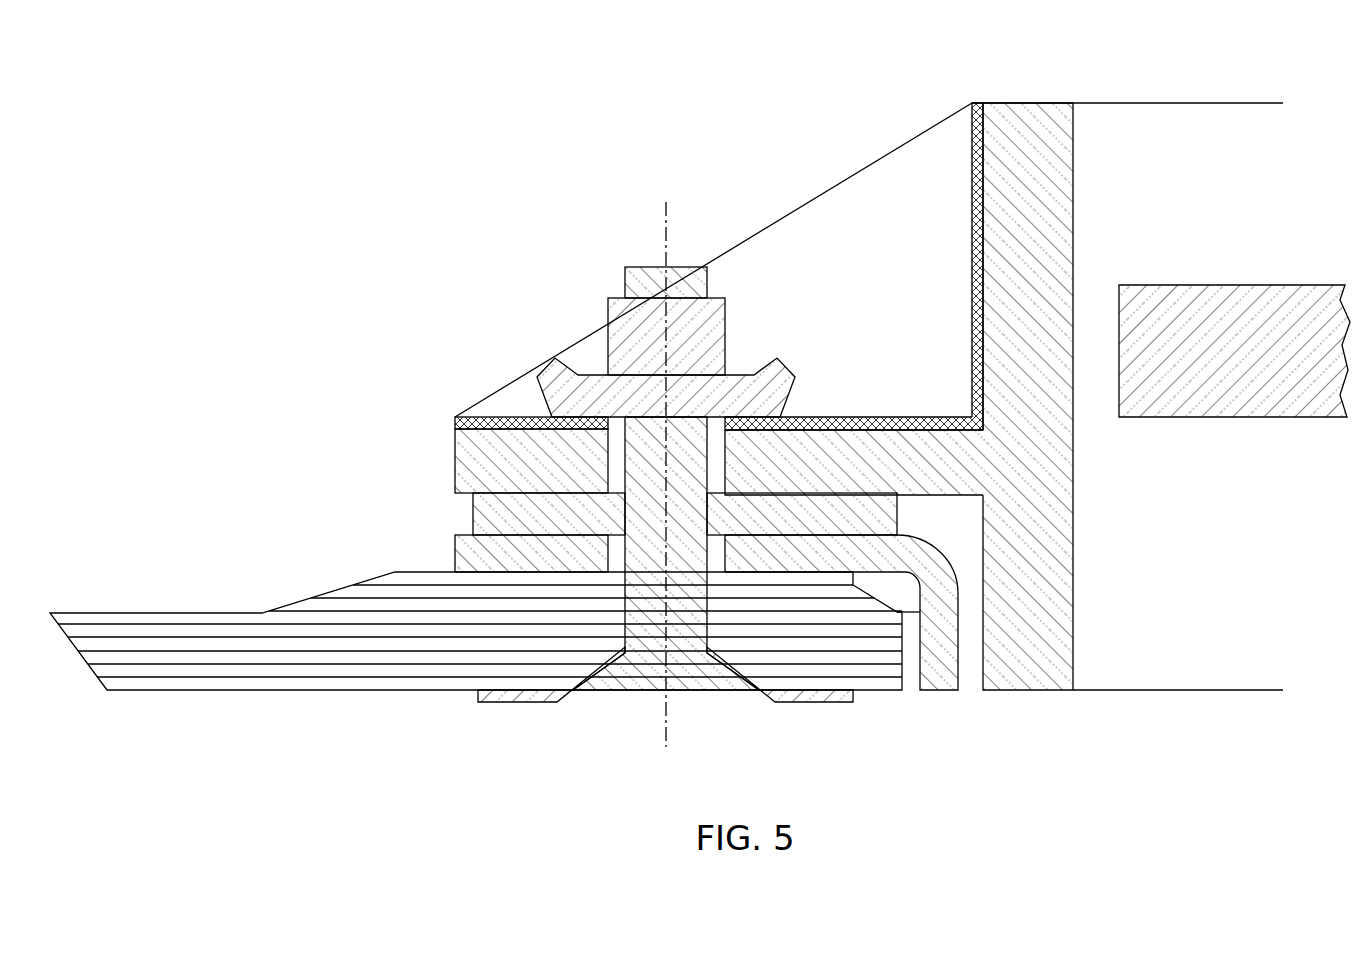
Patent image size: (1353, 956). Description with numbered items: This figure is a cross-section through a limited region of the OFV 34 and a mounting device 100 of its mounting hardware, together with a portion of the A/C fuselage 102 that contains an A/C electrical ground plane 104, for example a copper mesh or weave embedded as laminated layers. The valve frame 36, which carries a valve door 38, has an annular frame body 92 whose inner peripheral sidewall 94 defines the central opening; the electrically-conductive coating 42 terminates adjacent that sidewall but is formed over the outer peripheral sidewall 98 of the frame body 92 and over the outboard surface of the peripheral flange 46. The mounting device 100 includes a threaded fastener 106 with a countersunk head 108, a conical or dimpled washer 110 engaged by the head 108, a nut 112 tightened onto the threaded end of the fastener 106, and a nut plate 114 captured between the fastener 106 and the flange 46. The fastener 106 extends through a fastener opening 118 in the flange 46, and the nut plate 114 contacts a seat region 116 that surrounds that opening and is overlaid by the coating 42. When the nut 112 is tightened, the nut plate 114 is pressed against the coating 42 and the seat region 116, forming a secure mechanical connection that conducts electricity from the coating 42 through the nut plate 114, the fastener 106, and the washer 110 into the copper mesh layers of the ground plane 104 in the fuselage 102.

The outflow valve (OFV) 34 is at (638, 260).
The valve frame 36 is at (1127, 59).
The valve door 38 is at (1228, 287).
The electrically-conductive coating 42 is at (972, 300).
The peripheral flange 46 is at (455, 460).
The annular frame body 92 is at (1178, 607).
The inner peripheral sidewall 94 is at (1073, 200).
The outer peripheral sidewall 98 is at (978, 232).
The mounting device 100 is at (636, 236).
The A/C fuselage 102 is at (476, 608).
The A/C electrical ground plane 104 is at (202, 685).
The threaded fastener 106 is at (633, 672).
The countersunk head 108 is at (668, 718).
The dimpled washer 110 is at (497, 702).
The nut 112 is at (717, 313).
The nut plate 114 is at (785, 377).
The seat region 116 is at (587, 432).
The fastener opening 118 is at (717, 472).